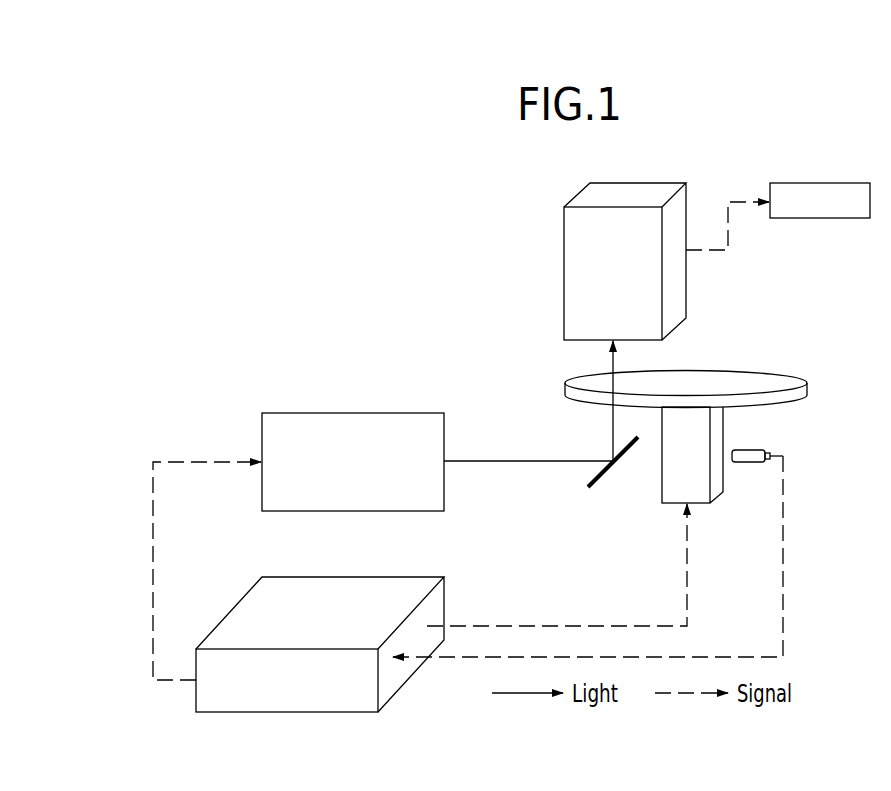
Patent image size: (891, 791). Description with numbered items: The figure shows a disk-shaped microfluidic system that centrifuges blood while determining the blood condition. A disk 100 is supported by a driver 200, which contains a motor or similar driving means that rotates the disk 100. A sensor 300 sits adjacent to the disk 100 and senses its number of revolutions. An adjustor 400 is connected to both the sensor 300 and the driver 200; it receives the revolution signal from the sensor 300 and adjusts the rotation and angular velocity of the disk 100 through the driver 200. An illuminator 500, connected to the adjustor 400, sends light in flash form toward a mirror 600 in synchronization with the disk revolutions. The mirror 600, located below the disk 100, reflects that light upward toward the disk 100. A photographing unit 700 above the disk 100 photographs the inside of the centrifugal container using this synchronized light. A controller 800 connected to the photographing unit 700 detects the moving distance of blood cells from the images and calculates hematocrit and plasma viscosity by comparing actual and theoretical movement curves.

The disk 100 is at (808, 390).
The driver 200 is at (660, 492).
The sensor 300 is at (760, 447).
The adjustor 400 is at (353, 577).
The illuminator 500 is at (355, 413).
The mirror 600 is at (609, 476).
The photographing unit 700 is at (632, 183).
The controller 800 is at (820, 183).